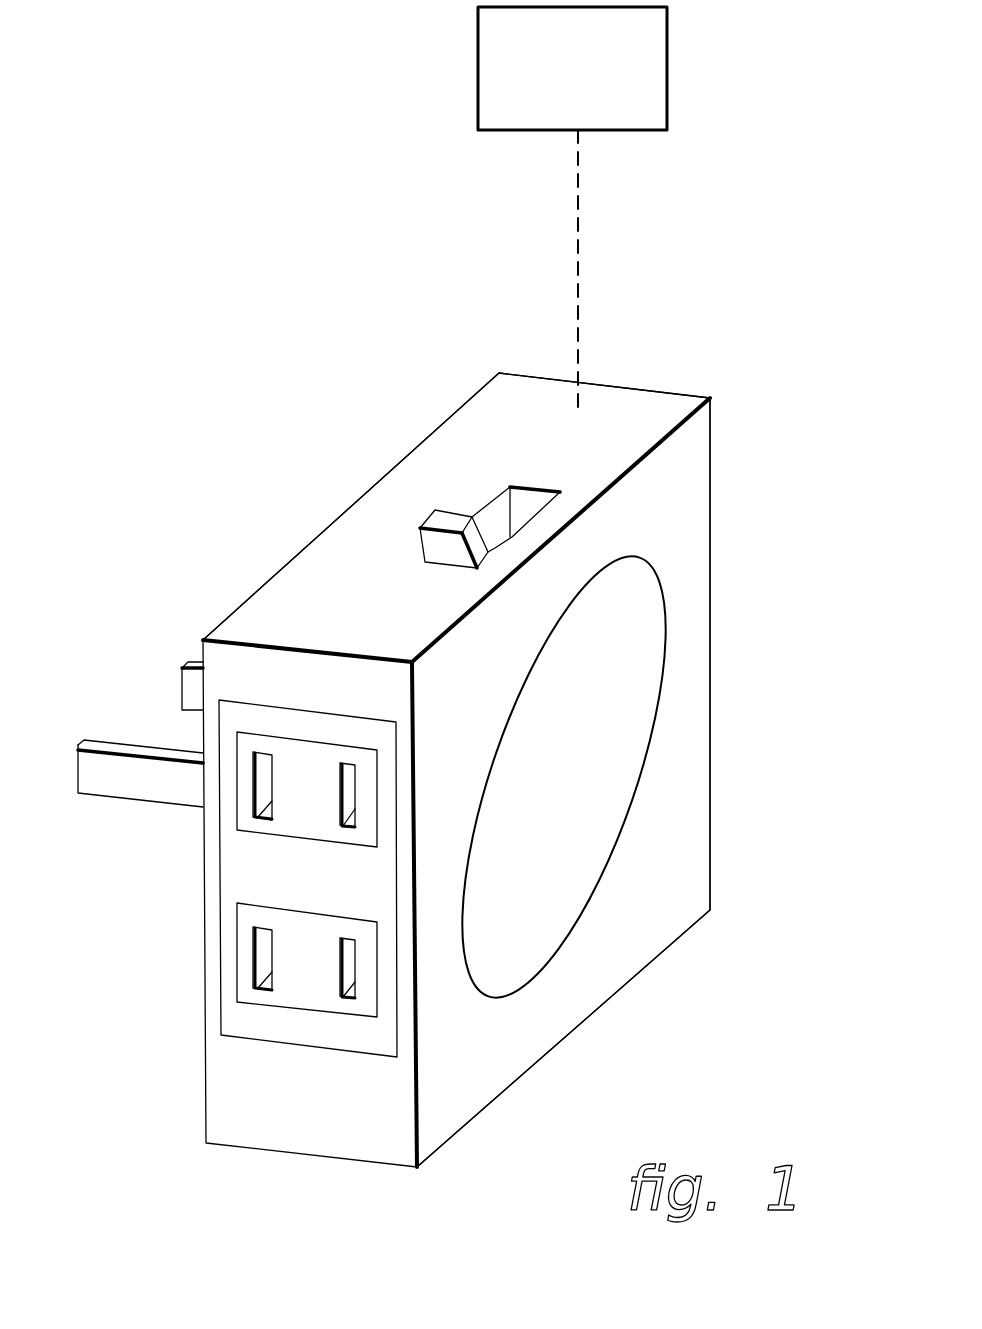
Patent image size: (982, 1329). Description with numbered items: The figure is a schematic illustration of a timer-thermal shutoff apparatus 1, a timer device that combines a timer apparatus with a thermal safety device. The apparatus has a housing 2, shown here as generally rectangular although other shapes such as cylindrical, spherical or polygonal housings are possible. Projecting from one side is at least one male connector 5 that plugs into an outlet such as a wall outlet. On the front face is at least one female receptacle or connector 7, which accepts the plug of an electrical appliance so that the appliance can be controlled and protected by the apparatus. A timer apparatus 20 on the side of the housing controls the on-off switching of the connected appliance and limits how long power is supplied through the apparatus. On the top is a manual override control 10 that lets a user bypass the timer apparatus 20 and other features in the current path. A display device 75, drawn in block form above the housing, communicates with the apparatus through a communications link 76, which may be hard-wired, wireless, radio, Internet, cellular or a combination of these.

The timer-thermal shutoff apparatus 1 is at (706, 352).
The housing 2 is at (637, 975).
The male connector 5 is at (359, 430).
The female receptacle or connector 7 is at (378, 1078).
The manual override control 10 is at (449, 518).
The timer apparatus 20 is at (678, 623).
The display device 75 is at (546, 115).
The communications link 76 is at (578, 200).